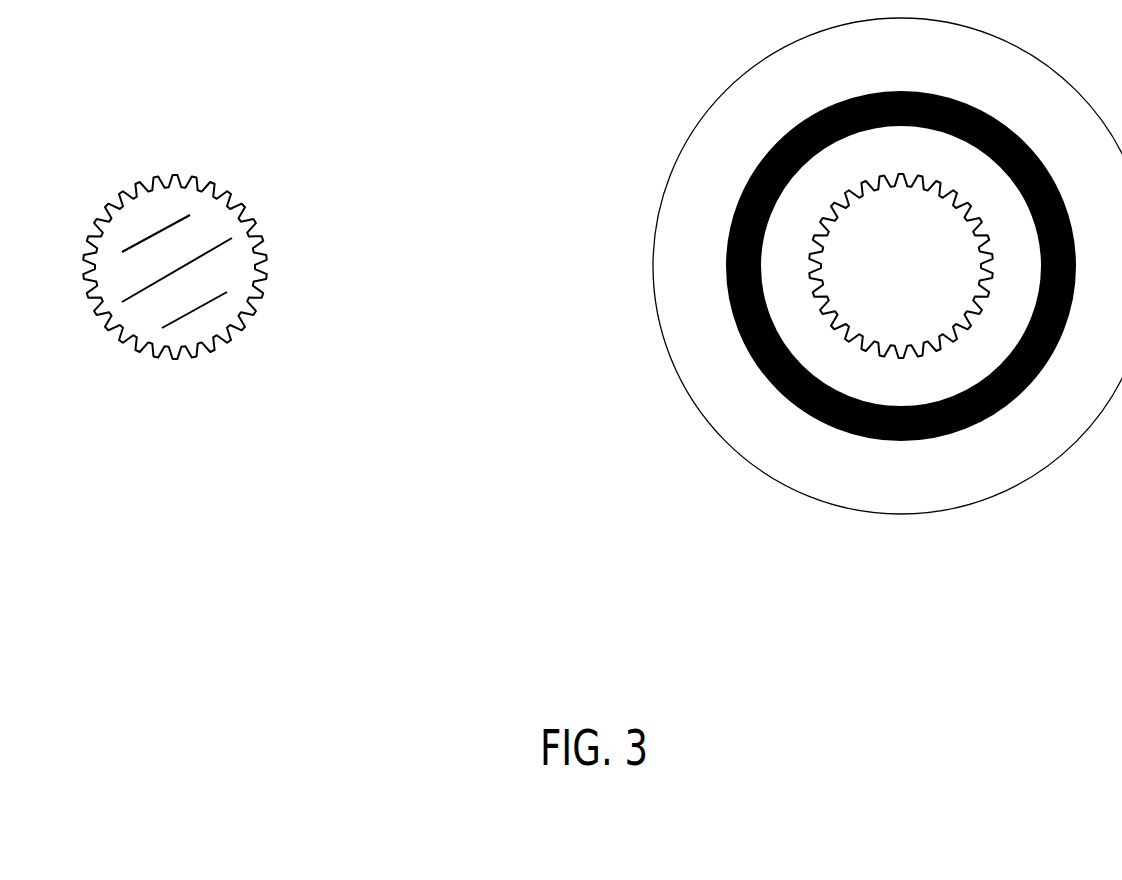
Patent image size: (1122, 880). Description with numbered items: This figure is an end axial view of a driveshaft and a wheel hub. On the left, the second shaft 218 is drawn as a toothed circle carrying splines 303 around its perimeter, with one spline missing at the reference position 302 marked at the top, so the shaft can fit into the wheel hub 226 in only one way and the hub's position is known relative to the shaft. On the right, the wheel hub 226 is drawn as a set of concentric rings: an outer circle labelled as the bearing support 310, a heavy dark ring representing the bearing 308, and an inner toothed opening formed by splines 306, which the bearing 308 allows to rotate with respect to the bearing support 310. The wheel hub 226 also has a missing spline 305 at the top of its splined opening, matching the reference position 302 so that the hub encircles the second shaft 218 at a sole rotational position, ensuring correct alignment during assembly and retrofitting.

The reference position 302 is at (172, 177).
The splines 303 is at (277, 250).
The second shaft 218 is at (248, 305).
The wheel hub 226 is at (958, 508).
The bearing support 310 is at (718, 352).
The bearing 308 is at (733, 218).
The splines 306 is at (985, 217).
The missing spline 305 is at (898, 176).